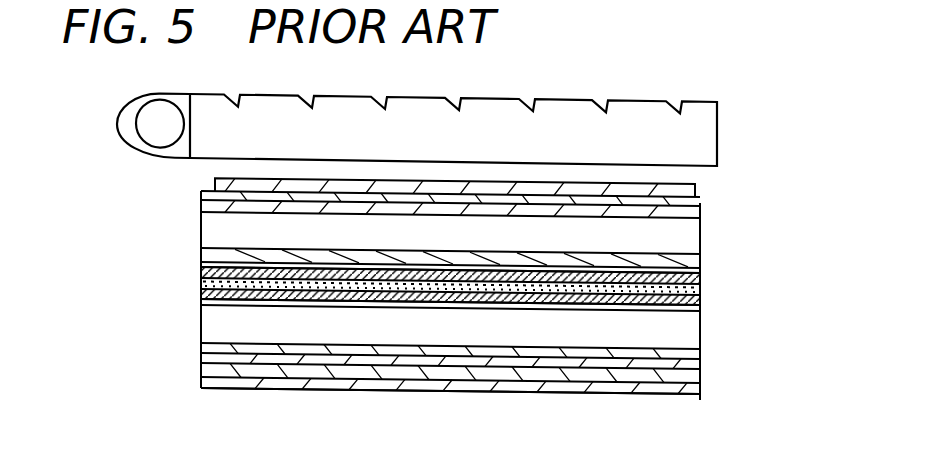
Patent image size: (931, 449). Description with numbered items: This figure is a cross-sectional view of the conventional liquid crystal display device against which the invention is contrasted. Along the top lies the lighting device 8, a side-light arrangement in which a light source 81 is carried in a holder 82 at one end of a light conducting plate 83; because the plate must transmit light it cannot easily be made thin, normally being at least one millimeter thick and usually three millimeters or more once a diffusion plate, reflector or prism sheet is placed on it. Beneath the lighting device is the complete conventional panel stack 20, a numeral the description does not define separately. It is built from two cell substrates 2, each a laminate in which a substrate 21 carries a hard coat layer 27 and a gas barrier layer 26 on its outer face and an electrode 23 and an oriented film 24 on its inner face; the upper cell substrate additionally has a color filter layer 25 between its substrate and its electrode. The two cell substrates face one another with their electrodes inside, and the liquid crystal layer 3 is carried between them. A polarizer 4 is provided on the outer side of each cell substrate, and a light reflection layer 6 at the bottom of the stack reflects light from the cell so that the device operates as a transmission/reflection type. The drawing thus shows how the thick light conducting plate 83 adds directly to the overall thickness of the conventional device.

The cell substrate 2 is at (497, 286).
The liquid crystal layer 3 is at (534, 284).
The polarizer 4 is at (695, 181).
The light reflection layer 6 is at (700, 395).
The lighting device 8 is at (118, 115).
The light source 81 is at (160, 125).
The light source holder 82 is at (153, 96).
The light conducting plate 83 is at (717, 129).
The laminate 20 is at (800, 113).
The substrate 21 is at (700, 225).
The electrode 23 is at (700, 270).
The oriented film 24 is at (483, 290).
The color filter layer 25 is at (700, 255).
The gas barrier layer 26 is at (700, 206).
The hard coat layer 27 is at (700, 194).